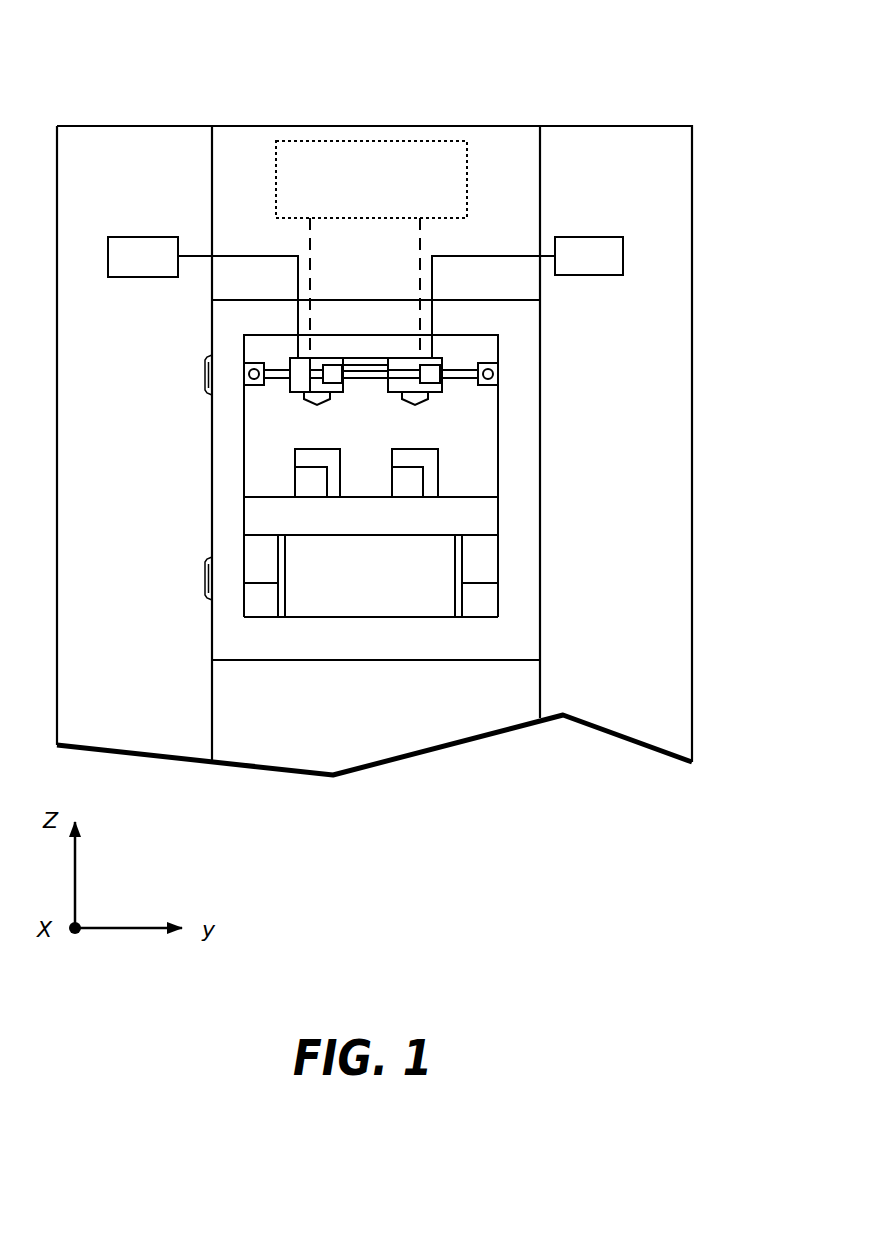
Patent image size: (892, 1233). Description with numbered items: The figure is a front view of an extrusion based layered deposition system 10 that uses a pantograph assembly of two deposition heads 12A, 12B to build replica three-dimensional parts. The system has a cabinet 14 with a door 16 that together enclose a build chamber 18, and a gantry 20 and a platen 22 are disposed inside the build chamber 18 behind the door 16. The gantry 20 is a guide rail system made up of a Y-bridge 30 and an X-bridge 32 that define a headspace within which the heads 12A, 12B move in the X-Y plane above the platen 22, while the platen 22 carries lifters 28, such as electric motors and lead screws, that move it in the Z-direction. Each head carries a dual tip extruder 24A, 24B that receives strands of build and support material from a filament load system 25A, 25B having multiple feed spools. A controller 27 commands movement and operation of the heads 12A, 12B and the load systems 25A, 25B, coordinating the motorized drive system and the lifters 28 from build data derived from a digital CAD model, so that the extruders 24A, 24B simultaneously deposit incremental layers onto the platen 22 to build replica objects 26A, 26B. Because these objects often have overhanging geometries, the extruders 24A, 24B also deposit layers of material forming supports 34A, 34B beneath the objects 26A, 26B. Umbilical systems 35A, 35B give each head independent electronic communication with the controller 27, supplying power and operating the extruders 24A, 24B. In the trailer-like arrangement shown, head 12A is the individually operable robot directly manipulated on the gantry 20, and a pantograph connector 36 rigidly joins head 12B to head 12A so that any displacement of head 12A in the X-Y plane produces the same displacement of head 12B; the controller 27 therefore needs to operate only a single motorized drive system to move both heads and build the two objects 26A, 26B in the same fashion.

The extrusion based layered deposition system 10 is at (238, 100).
The deposition head 12A is at (337, 394).
The deposition head 12B is at (392, 391).
The cabinet 14 is at (672, 192).
The door 16 is at (337, 650).
The build chamber 18 is at (483, 437).
The gantry 20 is at (483, 351).
The platen 22 is at (482, 523).
The dual tip extruder 24A is at (304, 395).
The dual tip extruder 24B is at (428, 400).
The filament load system 25A is at (203, 297).
The filament load system 25B is at (527, 297).
The replica three-dimensional object 26A is at (303, 452).
The replica three-dimensional object 26B is at (432, 462).
The controller 27 is at (371, 179).
The lifters 28 is at (278, 583).
The Y-bridge 30 is at (260, 388).
The X-bridge 32 is at (243, 362).
The support 34A is at (303, 486).
The support 34B is at (412, 479).
The umbilical system 35A is at (310, 227).
The umbilical system 35B is at (420, 227).
The pantograph connector 36 is at (363, 357).